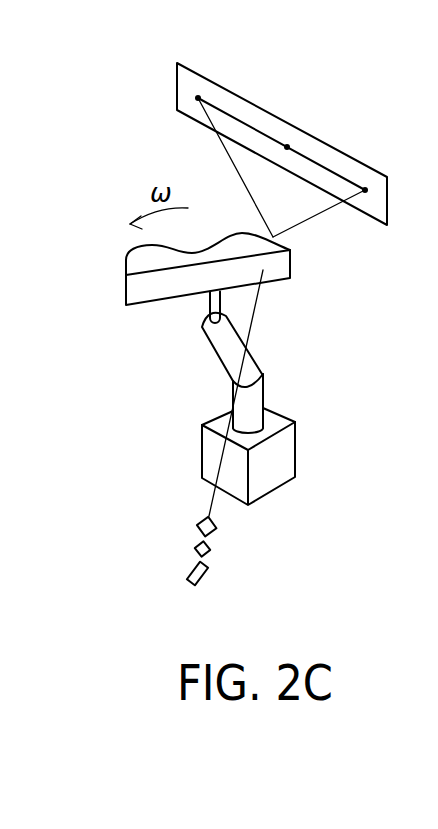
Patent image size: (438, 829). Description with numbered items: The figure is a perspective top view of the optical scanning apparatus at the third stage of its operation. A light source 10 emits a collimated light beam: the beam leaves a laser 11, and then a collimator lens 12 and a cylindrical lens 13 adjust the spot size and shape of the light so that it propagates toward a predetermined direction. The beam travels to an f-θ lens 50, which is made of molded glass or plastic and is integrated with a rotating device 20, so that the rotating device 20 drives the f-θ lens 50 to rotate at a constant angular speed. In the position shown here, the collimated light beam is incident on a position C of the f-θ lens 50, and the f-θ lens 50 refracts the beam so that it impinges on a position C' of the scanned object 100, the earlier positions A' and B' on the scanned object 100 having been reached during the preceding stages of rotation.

The scanned object 100 is at (177, 63).
The f-θ lens 50 is at (125, 293).
The rotating device 20 is at (287, 458).
The light source 10 is at (138, 532).
The cylindrical lens 13 is at (197, 524).
The collimator lens 12 is at (195, 548).
The laser 11 is at (158, 569).